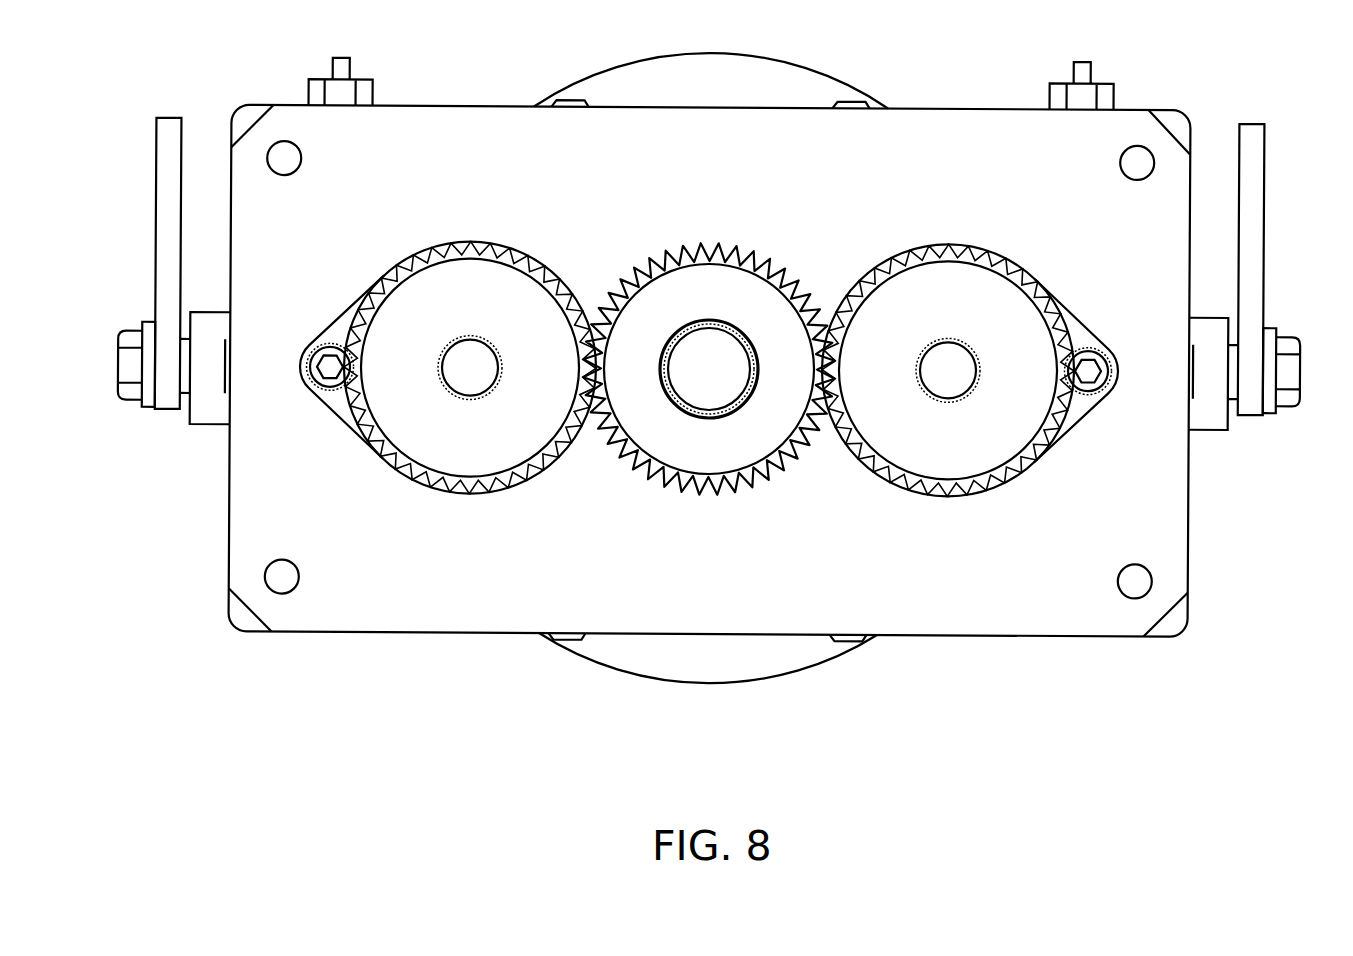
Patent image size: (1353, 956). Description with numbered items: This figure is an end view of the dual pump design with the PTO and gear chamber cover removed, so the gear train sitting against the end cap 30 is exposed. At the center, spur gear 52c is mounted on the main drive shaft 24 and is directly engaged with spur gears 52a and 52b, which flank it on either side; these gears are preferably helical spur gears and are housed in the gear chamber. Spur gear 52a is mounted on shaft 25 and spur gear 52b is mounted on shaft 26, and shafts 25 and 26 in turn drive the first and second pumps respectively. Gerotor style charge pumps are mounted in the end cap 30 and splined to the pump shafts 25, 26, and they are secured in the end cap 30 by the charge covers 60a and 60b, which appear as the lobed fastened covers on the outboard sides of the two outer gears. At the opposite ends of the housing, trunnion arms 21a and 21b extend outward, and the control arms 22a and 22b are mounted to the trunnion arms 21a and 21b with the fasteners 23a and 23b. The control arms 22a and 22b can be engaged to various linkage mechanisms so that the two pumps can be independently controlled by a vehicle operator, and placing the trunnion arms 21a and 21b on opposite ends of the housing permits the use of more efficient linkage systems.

The end cap 30 is at (388, 195).
The trunnion arm 21a is at (1232, 400).
The trunnion arm 21b is at (187, 412).
The control arm 22a is at (1250, 122).
The control arm 22b is at (170, 120).
The fastener 23a is at (1302, 373).
The fastener 23b is at (116, 368).
The main drive shaft 24 is at (695, 382).
The shaft 25 is at (934, 382).
The shaft 26 is at (456, 382).
The spur gear 52a is at (970, 446).
The spur gear 52b is at (490, 446).
The spur gear 52c is at (731, 456).
The charge cover 60a is at (1080, 411).
The charge cover 60b is at (343, 411).